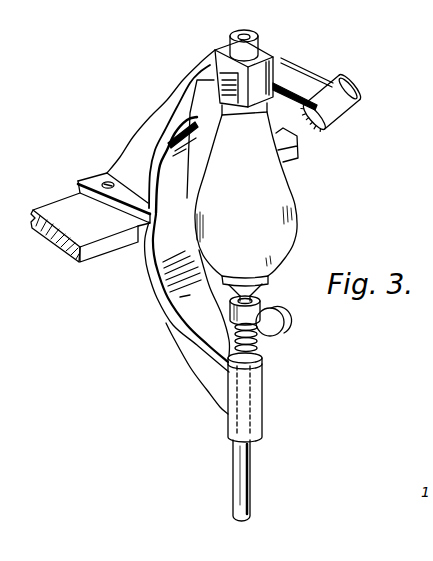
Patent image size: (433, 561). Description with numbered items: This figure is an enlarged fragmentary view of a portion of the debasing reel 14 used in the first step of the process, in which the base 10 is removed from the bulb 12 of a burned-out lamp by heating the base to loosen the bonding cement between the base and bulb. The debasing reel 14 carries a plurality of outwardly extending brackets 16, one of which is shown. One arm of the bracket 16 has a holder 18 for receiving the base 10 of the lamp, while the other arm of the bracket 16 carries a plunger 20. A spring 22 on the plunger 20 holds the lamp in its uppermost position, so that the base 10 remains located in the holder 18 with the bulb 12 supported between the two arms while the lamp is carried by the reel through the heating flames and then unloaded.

The base 10 is at (228, 98).
The bulb 12 is at (246, 199).
The debasing reel 14 is at (52, 207).
The bracket 16 is at (132, 143).
The holder 18 is at (267, 54).
The plunger 20 is at (253, 472).
The spring 22 is at (262, 345).